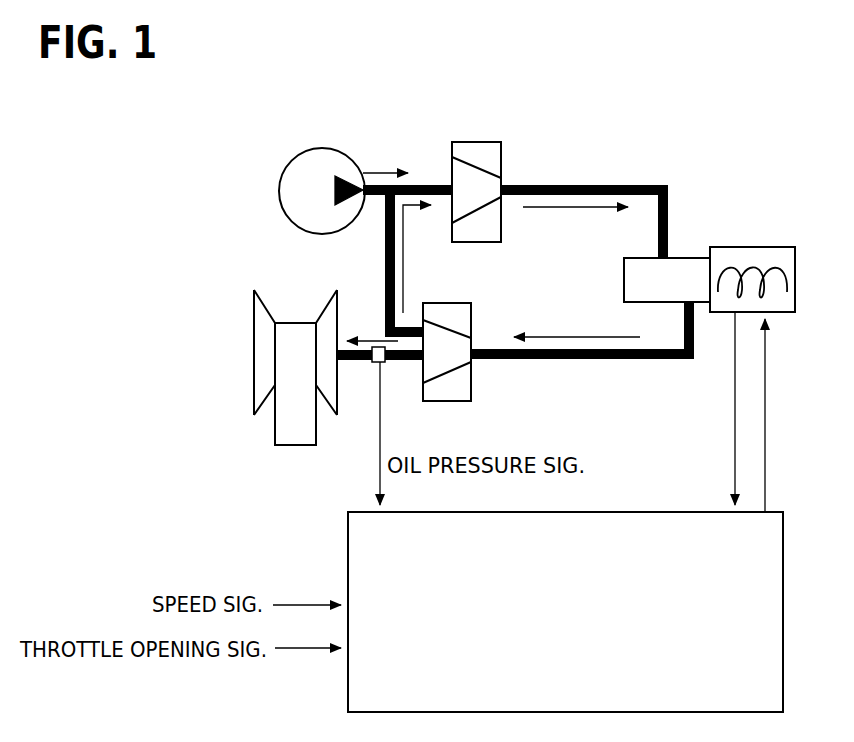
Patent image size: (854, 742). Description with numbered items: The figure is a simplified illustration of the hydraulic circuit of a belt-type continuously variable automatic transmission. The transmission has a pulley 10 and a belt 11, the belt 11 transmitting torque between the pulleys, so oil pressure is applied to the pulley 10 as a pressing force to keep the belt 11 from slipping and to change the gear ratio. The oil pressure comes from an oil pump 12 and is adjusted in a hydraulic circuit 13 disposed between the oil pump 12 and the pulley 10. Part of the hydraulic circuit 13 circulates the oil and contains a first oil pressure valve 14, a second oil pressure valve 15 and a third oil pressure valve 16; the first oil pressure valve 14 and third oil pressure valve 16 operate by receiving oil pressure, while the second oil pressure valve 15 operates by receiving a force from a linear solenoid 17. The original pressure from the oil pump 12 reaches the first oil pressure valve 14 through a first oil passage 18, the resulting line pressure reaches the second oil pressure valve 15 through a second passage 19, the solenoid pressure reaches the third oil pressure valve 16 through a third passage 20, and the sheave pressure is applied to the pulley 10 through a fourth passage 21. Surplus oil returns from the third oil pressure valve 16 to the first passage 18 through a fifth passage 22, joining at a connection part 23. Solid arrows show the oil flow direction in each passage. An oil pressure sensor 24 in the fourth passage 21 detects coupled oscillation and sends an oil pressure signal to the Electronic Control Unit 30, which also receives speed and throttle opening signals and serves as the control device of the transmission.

The pulley 10 is at (270, 360).
The belt 11 is at (295, 338).
The oil pump 12 is at (280, 166).
The hydraulic circuit 13 is at (696, 160).
The first oil pressure valve 14 is at (501, 158).
The second oil pressure valve 15 is at (688, 257).
The third oil pressure valve 16 is at (471, 388).
The linear solenoid 17 is at (760, 262).
The first oil passage 18 is at (428, 185).
The second passage 19 is at (598, 185).
The third passage 20 is at (592, 358).
The fourth passage 21 is at (400, 362).
The fifth passage 22 is at (386, 277).
The connection part 23 is at (383, 198).
The oil pressure sensor 24 is at (375, 362).
The Electronic Control Unit 30 is at (783, 537).